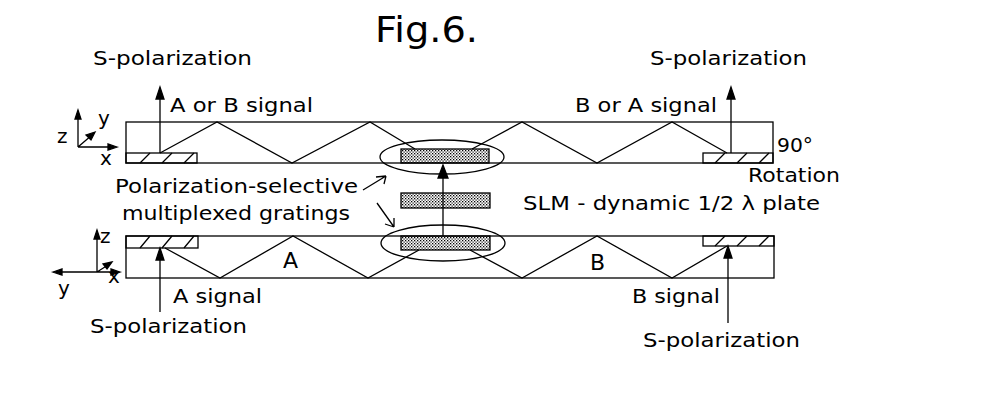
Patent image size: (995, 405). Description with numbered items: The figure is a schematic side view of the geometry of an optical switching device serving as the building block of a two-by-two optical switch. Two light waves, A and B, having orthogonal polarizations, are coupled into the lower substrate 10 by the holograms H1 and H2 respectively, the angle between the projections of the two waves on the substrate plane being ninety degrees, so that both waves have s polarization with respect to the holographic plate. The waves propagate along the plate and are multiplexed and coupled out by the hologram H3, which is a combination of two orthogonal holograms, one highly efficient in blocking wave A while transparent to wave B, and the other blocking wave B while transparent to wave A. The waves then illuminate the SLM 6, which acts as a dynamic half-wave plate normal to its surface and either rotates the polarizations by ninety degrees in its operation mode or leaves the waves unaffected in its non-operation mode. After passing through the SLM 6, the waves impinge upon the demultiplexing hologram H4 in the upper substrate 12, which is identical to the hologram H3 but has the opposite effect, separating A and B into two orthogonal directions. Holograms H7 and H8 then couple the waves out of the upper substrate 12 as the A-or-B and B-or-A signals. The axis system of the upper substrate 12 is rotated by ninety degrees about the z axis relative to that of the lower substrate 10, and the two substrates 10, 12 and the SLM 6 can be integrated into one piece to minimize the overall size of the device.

The SLM 6 is at (490, 200).
The substrate 10 is at (774, 258).
The substrate 12 is at (762, 121).
The hologram H1 is at (150, 236).
The hologram H2 is at (727, 235).
The hologram H3 is at (457, 250).
The demultiplexing hologram H4 is at (460, 149).
The hologram H7 is at (148, 153).
The hologram H8 is at (750, 153).